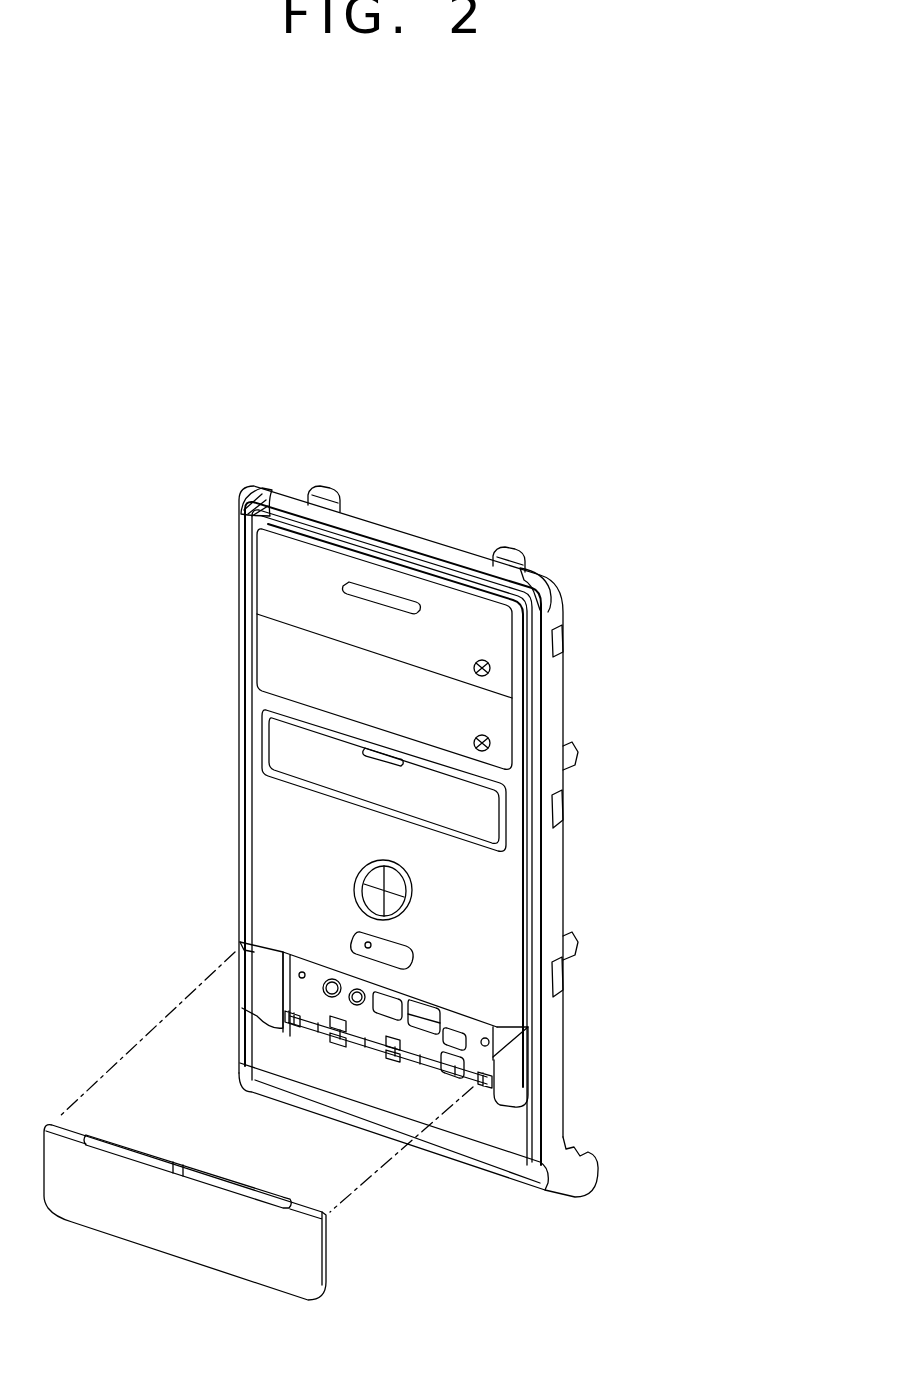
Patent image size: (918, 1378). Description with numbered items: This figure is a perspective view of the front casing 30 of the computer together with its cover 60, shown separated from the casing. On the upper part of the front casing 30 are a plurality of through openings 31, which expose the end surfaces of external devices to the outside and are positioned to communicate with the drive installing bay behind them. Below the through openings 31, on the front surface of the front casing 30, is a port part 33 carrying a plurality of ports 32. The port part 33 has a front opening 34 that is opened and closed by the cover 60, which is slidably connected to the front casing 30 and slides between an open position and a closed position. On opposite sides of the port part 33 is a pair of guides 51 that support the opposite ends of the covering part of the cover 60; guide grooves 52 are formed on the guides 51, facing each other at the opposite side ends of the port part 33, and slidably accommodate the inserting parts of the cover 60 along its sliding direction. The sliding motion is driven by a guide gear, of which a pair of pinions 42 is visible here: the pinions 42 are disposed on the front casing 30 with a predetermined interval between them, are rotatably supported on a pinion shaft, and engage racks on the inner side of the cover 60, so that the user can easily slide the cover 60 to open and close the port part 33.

The front casing 30 is at (176, 476).
The through openings 31 is at (505, 818).
The ports 32 is at (310, 993).
The port part 33 is at (476, 1038).
The front opening 34 is at (493, 1057).
The pinions 42 is at (292, 1028).
The guides 51 is at (258, 1013).
The guide grooves 52 is at (236, 952).
The cover 60 is at (190, 1258).